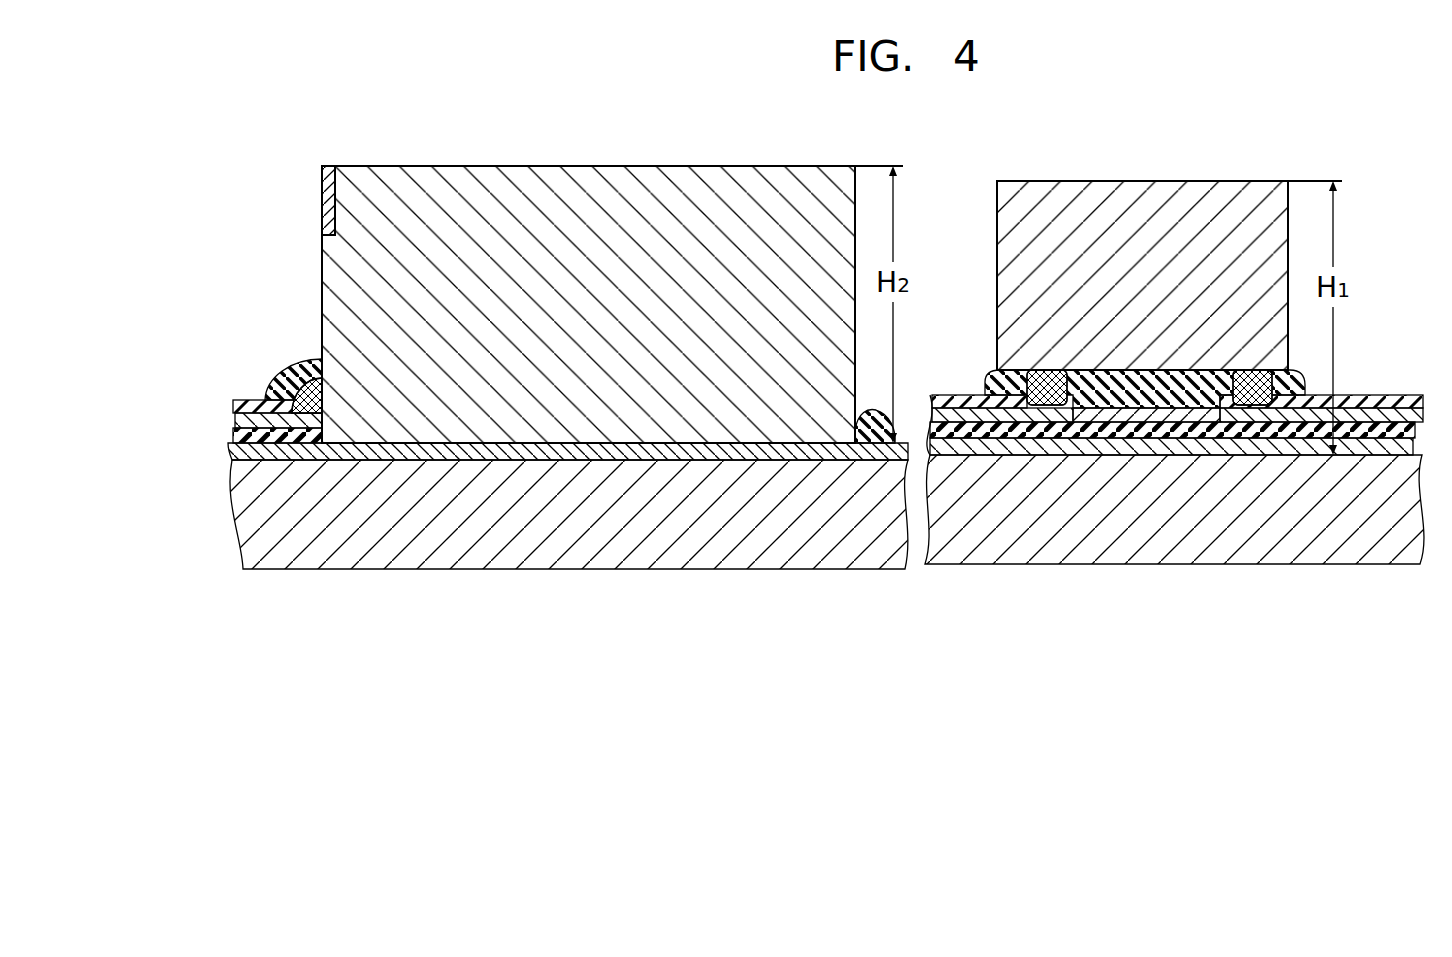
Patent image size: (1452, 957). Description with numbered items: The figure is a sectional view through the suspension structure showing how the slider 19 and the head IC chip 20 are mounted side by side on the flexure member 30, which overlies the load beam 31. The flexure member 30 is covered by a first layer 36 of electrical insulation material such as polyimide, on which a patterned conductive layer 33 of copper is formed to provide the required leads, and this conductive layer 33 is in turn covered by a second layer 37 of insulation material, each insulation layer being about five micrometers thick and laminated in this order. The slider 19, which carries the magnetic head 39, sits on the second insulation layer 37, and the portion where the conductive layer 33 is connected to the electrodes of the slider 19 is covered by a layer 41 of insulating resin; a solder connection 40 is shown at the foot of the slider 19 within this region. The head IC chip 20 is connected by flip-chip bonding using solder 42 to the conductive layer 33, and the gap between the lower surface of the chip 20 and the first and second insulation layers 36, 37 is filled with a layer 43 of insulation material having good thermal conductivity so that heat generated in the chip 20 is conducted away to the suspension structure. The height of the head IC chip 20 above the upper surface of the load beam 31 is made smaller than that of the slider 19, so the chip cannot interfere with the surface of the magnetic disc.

The slider 19 is at (784, 190).
The head IC chip 20 is at (1166, 190).
The flexure member 30 is at (257, 457).
The load beam 31 is at (620, 569).
The conductive layer 33 is at (240, 420).
The first insulation layer 36 is at (232, 437).
The second insulation layer 37 is at (236, 402).
The magnetic head 39 is at (326, 197).
The solder bump 40 is at (312, 388).
The insulation layer 41 is at (288, 385).
The solder 42 is at (992, 378).
The insulation layer 43 is at (1047, 372).